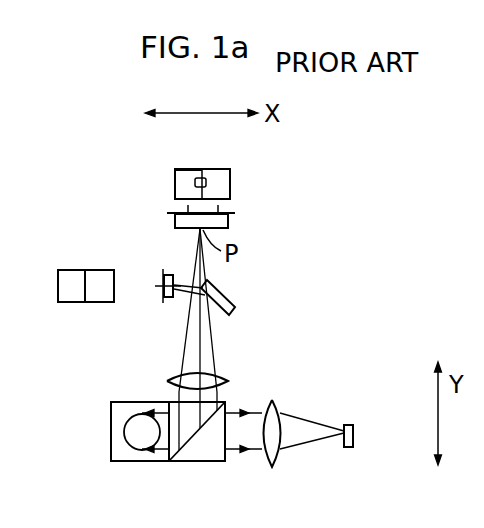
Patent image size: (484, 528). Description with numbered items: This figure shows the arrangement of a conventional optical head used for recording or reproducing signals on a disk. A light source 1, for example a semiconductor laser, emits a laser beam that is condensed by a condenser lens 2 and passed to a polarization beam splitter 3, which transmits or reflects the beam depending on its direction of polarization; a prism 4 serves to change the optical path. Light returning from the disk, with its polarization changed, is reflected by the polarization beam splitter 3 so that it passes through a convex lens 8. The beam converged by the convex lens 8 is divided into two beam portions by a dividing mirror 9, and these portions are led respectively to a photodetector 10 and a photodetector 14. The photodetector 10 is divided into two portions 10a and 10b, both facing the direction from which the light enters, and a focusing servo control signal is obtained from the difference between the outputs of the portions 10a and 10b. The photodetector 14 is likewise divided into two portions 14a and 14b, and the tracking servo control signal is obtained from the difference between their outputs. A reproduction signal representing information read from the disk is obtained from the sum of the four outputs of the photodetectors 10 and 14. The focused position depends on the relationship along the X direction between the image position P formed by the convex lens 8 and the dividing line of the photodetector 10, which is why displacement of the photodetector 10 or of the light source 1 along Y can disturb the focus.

The light source 1 is at (353, 426).
The condenser lens 2 is at (278, 407).
The polarization beam splitter 3 is at (203, 462).
The prism 4 is at (111, 438).
The convex lens 8 is at (229, 380).
The dividing mirror 9 is at (236, 309).
The photodetector 10 is at (230, 222).
The photodetector portion 10a is at (180, 170).
The photodetector portion 10b is at (232, 183).
The photodetector 14 is at (166, 273).
The photodetector portion 14a is at (68, 303).
The photodetector portion 14b is at (107, 303).